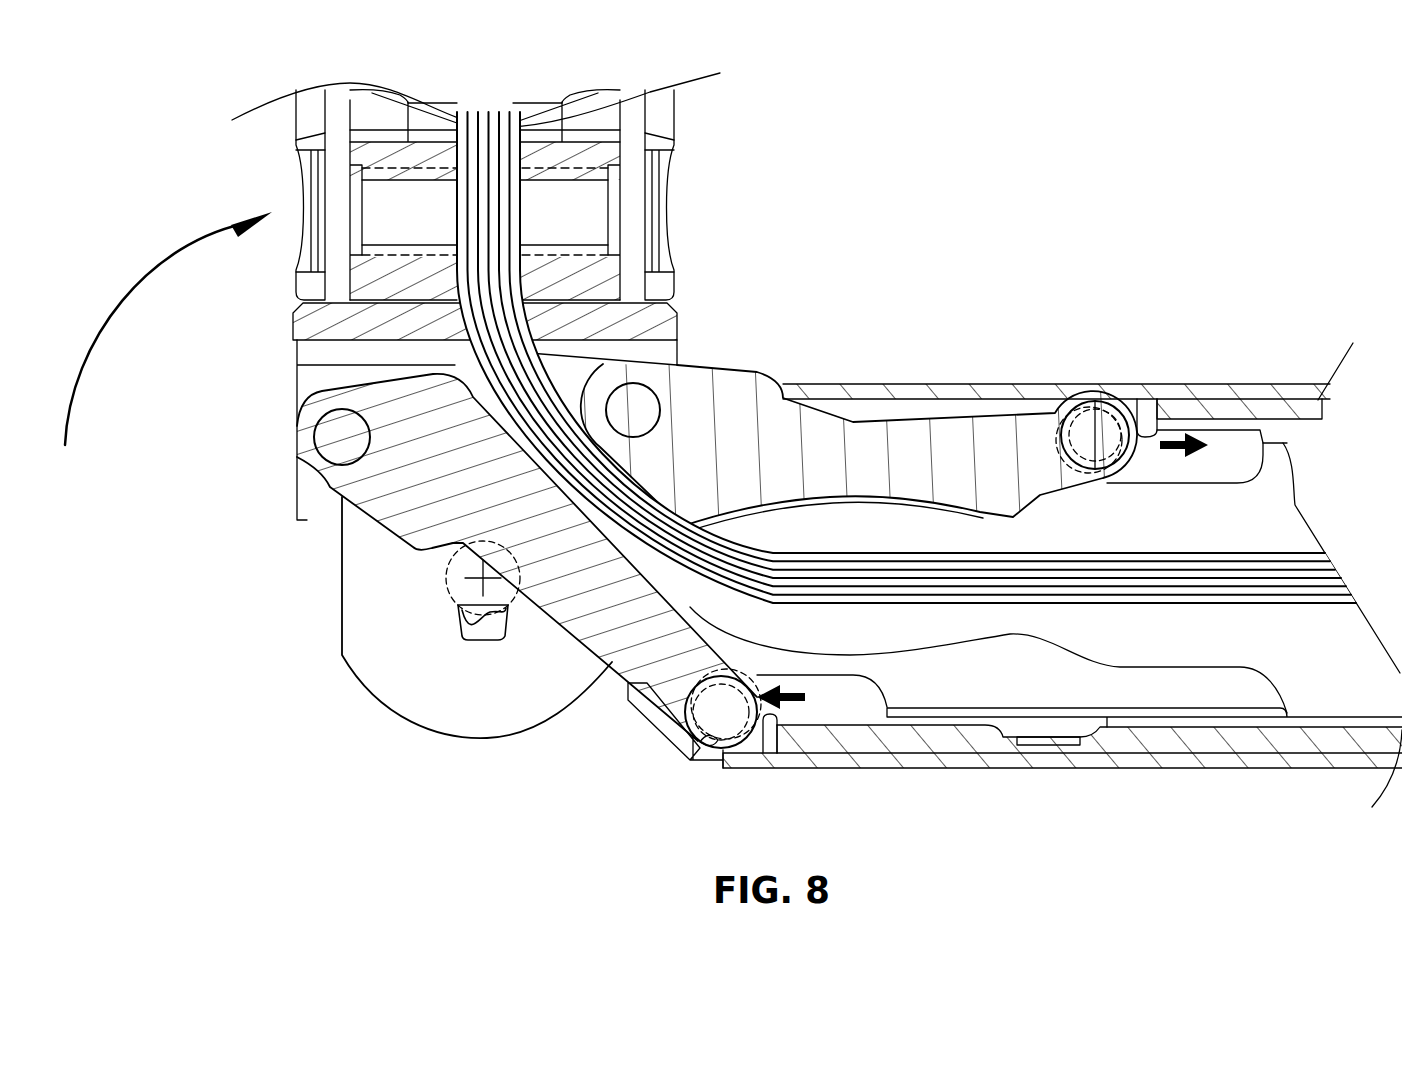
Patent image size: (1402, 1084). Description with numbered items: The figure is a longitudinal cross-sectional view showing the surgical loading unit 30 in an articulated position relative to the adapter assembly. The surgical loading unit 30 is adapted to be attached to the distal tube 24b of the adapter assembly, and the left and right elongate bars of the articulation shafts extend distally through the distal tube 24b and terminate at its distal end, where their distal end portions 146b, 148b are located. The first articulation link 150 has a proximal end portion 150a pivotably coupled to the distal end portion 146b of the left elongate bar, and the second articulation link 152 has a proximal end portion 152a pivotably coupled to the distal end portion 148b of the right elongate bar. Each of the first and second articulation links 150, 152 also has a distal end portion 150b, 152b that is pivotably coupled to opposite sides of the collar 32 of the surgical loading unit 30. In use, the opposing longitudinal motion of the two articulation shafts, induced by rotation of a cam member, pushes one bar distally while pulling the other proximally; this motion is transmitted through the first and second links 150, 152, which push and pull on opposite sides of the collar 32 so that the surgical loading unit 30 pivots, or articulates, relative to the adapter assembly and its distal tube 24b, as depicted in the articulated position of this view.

The surgical loading unit 30 is at (742, 112).
The collar 32 is at (297, 333).
The first articulation link 150 is at (490, 598).
The proximal end portion of first articulation link 150a is at (713, 720).
The distal end portion of first articulation link 150b is at (327, 470).
The second articulation link 152 is at (909, 424).
The proximal end portion of second articulation link 152a is at (1100, 428).
The distal end portion of second articulation link 152b is at (640, 412).
The distal end portion of right elongate bar 148b is at (1230, 443).
The distal end portion of left elongate bar 146b is at (872, 718).
The distal tube 24b is at (1050, 765).